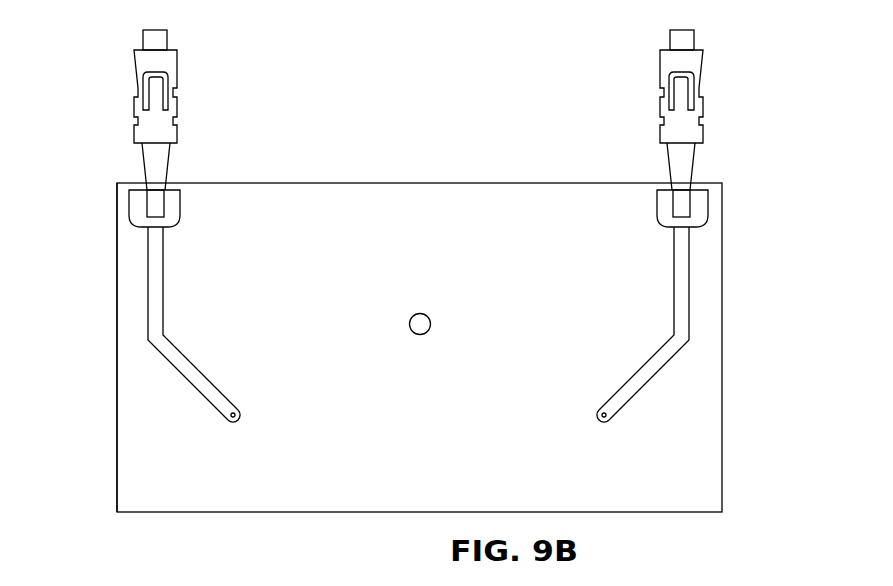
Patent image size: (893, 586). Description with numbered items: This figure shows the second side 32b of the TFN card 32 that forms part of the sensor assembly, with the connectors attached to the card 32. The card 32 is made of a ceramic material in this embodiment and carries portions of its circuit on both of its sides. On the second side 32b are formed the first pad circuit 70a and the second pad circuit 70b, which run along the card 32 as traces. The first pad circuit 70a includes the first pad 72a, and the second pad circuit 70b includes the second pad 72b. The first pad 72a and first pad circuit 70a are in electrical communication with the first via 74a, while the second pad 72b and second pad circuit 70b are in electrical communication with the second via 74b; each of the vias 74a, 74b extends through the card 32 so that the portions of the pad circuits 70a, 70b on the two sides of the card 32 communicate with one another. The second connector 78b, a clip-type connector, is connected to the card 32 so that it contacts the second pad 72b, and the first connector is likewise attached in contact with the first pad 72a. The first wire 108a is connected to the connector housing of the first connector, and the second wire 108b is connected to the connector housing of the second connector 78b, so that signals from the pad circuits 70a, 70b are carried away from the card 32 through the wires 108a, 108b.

The TFN card 32 is at (708, 453).
The second side of the card 32b is at (127, 462).
The first pad circuit 70a is at (683, 305).
The second pad circuit 70b is at (150, 300).
The first pad 72a is at (702, 209).
The second pad 72b is at (138, 205).
The first via 74a is at (600, 421).
The second via 74b is at (237, 421).
The second connector 78b is at (134, 95).
The first wire 108a is at (688, 40).
The second wire 108b is at (162, 40).